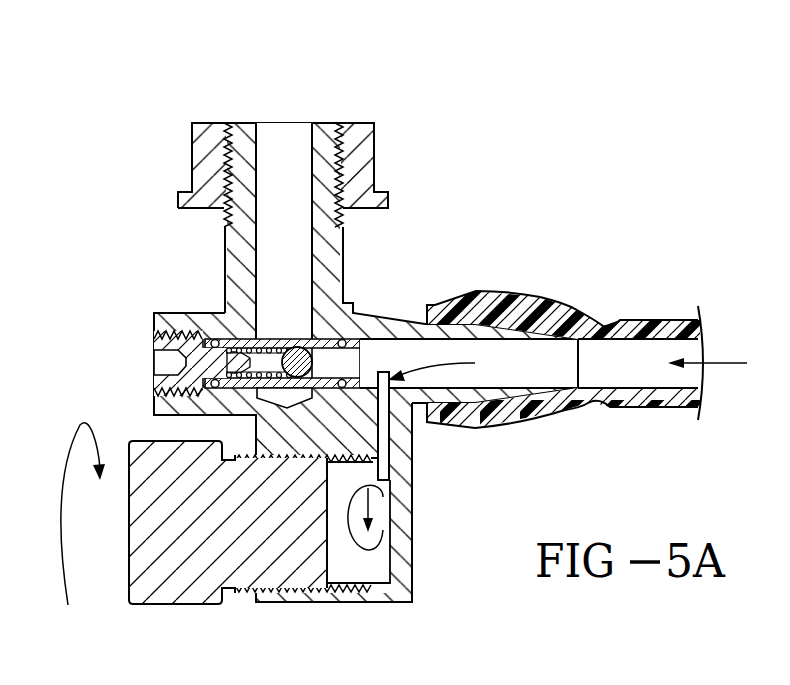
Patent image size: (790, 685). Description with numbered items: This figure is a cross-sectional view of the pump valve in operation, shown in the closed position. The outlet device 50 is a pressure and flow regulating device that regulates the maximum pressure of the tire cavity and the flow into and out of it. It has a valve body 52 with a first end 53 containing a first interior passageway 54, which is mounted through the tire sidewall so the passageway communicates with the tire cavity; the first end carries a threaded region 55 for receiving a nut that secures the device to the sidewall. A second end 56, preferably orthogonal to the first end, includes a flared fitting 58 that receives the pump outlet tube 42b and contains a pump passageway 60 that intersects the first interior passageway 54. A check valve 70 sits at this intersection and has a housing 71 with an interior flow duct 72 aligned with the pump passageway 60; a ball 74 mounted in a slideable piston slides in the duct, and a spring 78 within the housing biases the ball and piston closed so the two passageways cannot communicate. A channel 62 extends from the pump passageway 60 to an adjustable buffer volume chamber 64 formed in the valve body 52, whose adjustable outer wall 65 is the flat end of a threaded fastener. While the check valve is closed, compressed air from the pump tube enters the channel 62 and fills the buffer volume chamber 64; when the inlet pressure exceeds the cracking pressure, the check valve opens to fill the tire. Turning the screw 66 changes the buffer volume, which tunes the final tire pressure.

The outlet device 50 is at (110, 165).
The valve body 52 is at (195, 312).
The first end 53 is at (257, 155).
The first interior passageway 54 is at (257, 155).
The threaded region 55 is at (340, 150).
The second end 56 is at (437, 392).
The flared fitting 58 is at (527, 397).
The pump passageway 60 is at (503, 353).
The channel 62 is at (385, 458).
The adjustable buffer volume chamber 64 is at (363, 568).
The adjustable outer wall 65 is at (327, 545).
The screw 66 is at (173, 578).
The check valve 70 is at (284, 305).
The housing 71 is at (182, 350).
The interior flow duct 72 is at (348, 362).
The ball 74 is at (310, 353).
The spring 78 is at (250, 372).
The pump outlet tube 42b is at (612, 318).